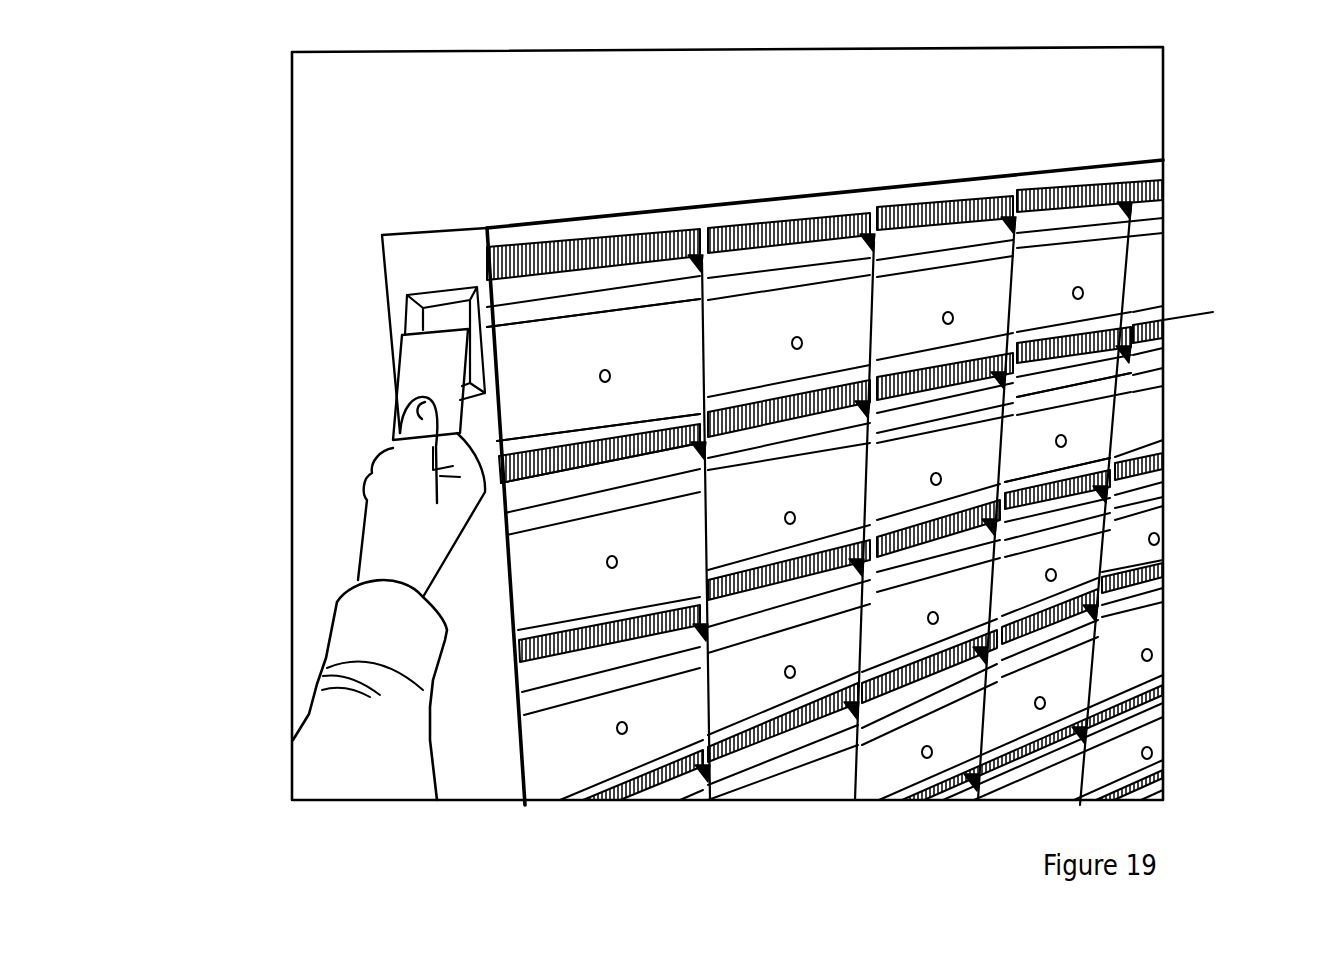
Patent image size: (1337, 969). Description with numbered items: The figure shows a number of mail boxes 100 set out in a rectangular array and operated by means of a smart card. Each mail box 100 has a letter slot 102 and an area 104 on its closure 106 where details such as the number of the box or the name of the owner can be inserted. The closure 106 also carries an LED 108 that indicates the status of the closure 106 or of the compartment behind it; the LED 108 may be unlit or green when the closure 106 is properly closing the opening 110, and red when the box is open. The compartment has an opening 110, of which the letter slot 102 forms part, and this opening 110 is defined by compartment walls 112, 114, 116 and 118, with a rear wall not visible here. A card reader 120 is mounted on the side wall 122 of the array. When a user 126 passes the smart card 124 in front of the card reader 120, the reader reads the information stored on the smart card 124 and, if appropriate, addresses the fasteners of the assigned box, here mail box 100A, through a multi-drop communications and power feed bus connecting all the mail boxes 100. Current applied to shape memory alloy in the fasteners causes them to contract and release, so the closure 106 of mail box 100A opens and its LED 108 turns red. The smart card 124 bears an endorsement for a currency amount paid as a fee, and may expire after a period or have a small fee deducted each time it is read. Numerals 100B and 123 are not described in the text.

The mail box 100 is at (803, 253).
The mail box 100A is at (1097, 418).
The card pocket 100B is at (613, 280).
The letter slot 102 is at (912, 203).
The area 104 is at (762, 285).
The closure 106 is at (1120, 248).
The LED 108 is at (606, 369).
The opening 110 is at (875, 252).
The compartment wall 112 is at (525, 240).
The compartment wall 114 is at (487, 260).
The compartment wall 116 is at (562, 462).
The compartment wall 118 is at (704, 290).
The card reader 120 is at (381, 241).
The side wall 122 is at (387, 327).
The gift card 123 is at (437, 346).
The smart card 124 is at (393, 410).
The user 126 is at (358, 566).